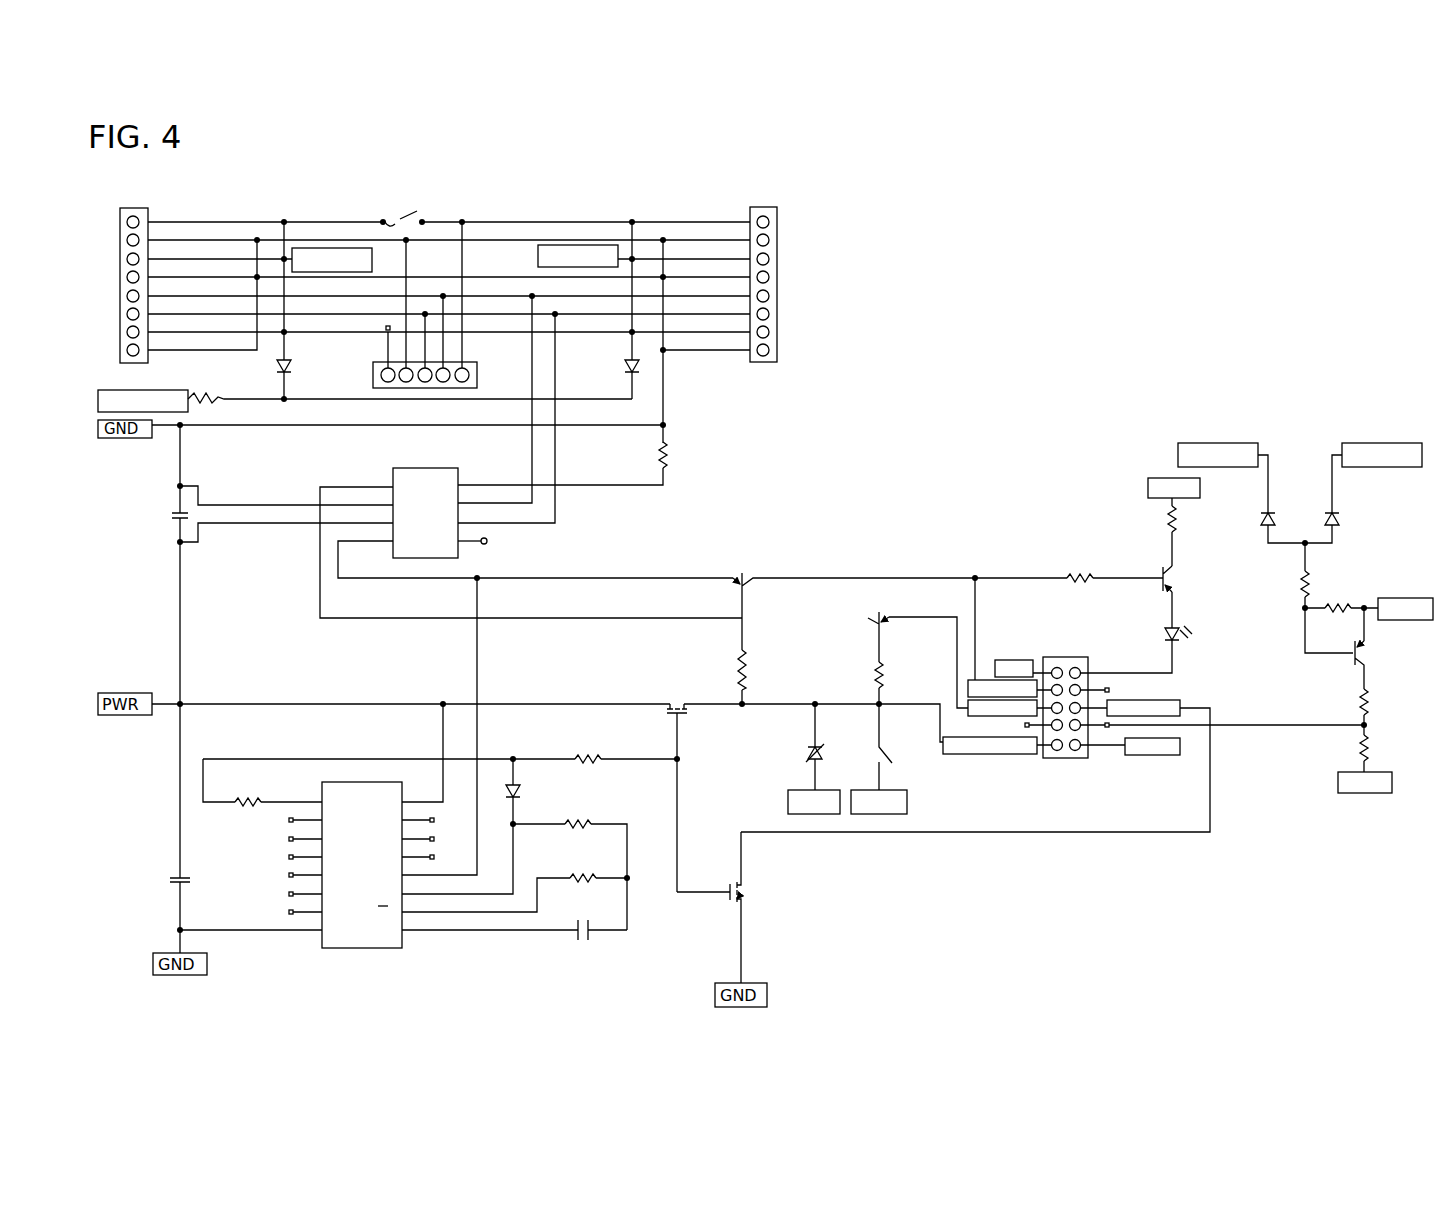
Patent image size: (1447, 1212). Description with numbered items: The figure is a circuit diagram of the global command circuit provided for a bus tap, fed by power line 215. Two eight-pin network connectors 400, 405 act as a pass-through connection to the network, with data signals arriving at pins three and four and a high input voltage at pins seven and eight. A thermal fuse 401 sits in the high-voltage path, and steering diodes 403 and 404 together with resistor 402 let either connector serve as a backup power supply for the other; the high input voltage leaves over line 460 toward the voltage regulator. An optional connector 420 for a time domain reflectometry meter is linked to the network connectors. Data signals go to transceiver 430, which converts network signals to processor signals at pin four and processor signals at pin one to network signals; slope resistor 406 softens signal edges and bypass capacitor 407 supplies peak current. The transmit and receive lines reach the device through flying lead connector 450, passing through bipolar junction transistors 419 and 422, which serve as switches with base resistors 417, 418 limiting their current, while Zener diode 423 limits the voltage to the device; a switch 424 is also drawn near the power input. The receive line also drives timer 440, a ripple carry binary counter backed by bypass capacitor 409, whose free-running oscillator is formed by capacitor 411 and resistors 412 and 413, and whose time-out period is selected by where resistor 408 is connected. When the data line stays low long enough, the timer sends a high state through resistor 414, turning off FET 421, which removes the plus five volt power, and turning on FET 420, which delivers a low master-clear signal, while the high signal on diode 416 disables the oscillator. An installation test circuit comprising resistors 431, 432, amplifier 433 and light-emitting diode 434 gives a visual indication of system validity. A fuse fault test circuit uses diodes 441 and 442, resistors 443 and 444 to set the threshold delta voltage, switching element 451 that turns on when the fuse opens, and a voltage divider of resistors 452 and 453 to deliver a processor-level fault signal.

The power line 215 is at (582, 194).
The network connector 400 is at (150, 208).
The fuse 401 is at (404, 212).
The resistor 402 is at (224, 401).
The steering diode 403 is at (292, 358).
The steering diode 404 is at (626, 360).
The network connector 405 is at (778, 207).
The slope resistor 406 is at (659, 461).
The bypass capacitor 407 is at (172, 511).
The resistor 408 is at (240, 800).
The bypass capacitor 409 is at (185, 878).
The capacitor 411 is at (586, 938).
The resistor 412 is at (576, 875).
The resistor 413 is at (574, 821).
The resistor 414 is at (578, 756).
The diode 416 is at (519, 795).
The base resistor 417 is at (738, 660).
The base resistor 418 is at (884, 676).
The bipolar junction transistor 419 is at (869, 631).
The connector / field effect transistor 420 is at (477, 364).
The field effect transistor 421 is at (673, 713).
The bipolar junction transistor 422 is at (734, 590).
The Zener diode 423 is at (808, 761).
The switch 424 is at (884, 759).
The transceiver 430 is at (445, 467).
The resistor 431 is at (1068, 576).
The resistor 432 is at (1167, 525).
The amplifier 433 is at (1166, 590).
The light-emitting diode 434 is at (1166, 640).
The timer 440 is at (352, 949).
The diode 441 is at (1261, 528).
The diode 442 is at (1340, 528).
The resistor 443 is at (1300, 592).
The resistor 444 is at (1329, 602).
The flying lead connector 450 is at (1077, 657).
The switching element 451 is at (1356, 661).
The resistor 452 is at (1372, 703).
The resistor 453 is at (1358, 751).
The line 460 is at (195, 394).